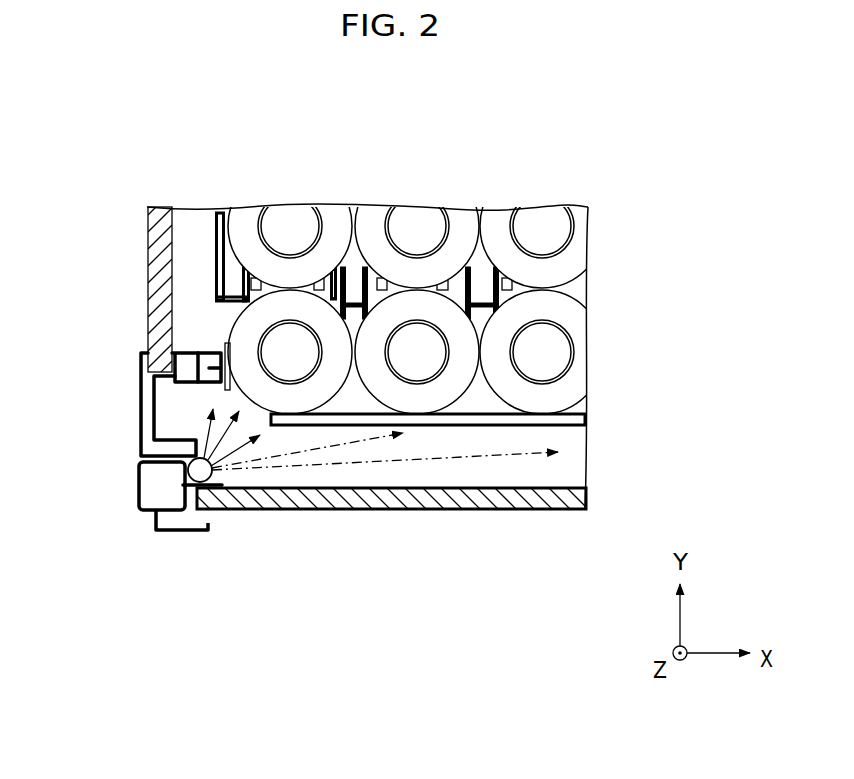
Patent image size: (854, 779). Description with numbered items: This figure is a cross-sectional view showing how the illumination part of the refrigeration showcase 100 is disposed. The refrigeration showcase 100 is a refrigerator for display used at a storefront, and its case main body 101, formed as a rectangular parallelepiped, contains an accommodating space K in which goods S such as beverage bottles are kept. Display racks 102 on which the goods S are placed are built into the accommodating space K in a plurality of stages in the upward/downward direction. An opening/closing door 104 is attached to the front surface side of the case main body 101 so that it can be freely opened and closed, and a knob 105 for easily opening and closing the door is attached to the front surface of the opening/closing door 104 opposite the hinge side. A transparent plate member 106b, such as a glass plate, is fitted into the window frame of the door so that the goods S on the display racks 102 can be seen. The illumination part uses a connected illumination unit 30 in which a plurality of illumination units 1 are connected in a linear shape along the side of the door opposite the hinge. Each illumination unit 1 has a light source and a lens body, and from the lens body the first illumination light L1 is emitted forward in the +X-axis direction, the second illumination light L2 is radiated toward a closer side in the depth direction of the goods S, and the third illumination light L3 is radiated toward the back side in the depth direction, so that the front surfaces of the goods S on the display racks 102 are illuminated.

The refrigeration showcase 100 is at (202, 128).
The goods S is at (422, 213).
The accommodating space K is at (194, 263).
The case main body 101 is at (148, 270).
The display racks 102 is at (586, 418).
The opening/closing door 104 is at (406, 527).
The transparent plate member 106b is at (551, 508).
The knob 105 is at (170, 537).
The illumination unit 1 is at (204, 482).
The connected illumination unit 30 is at (200, 470).
The first illumination light L1 is at (307, 452).
The second illumination light L2 is at (210, 445).
The third illumination light L3 is at (226, 409).